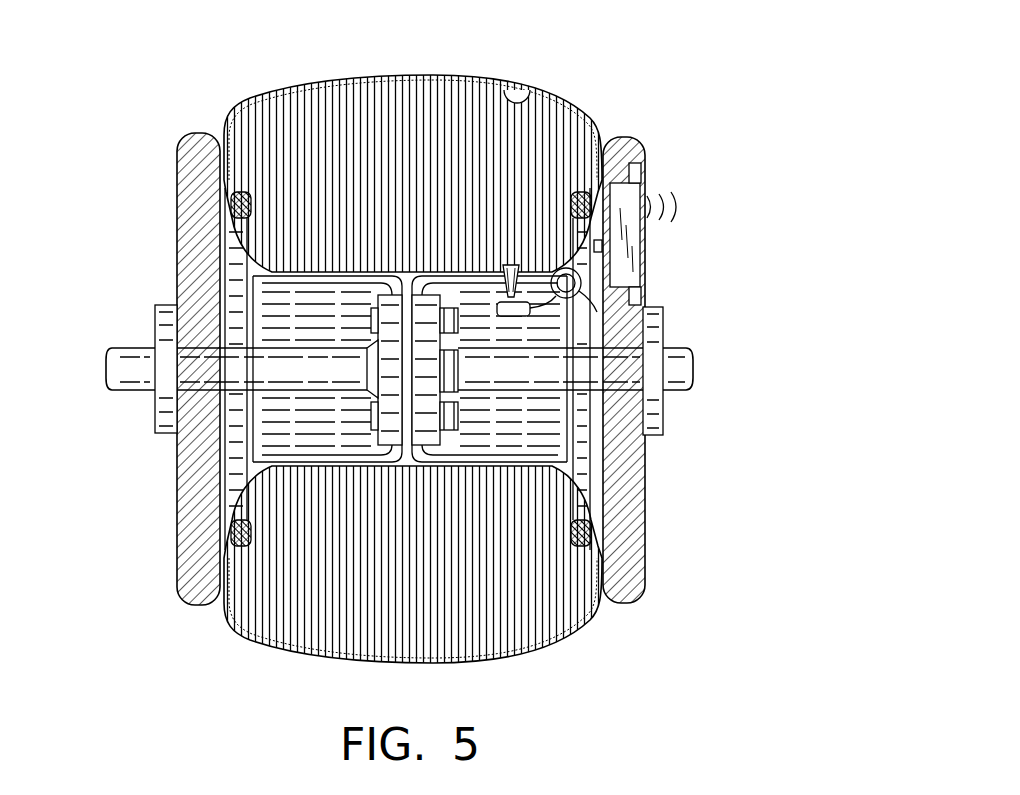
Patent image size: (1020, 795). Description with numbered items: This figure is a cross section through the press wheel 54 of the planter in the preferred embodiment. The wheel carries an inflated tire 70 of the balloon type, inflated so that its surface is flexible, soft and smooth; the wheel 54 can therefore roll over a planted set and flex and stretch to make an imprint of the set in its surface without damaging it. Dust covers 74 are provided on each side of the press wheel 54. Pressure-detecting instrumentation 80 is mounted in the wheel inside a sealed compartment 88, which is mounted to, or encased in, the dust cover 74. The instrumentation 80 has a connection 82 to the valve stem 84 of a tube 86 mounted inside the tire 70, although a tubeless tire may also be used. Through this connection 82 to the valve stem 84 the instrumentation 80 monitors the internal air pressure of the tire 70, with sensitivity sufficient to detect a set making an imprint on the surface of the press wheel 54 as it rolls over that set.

The press wheel 54 is at (233, 76).
The inflated tire 70 is at (475, 78).
The dust cover 74 is at (176, 192).
The pressure-detecting instrumentation 80 is at (637, 230).
The sealed compartment 88 is at (637, 230).
The connection 82 is at (598, 310).
The valve stem 84 is at (508, 264).
The tube 86 is at (540, 92).